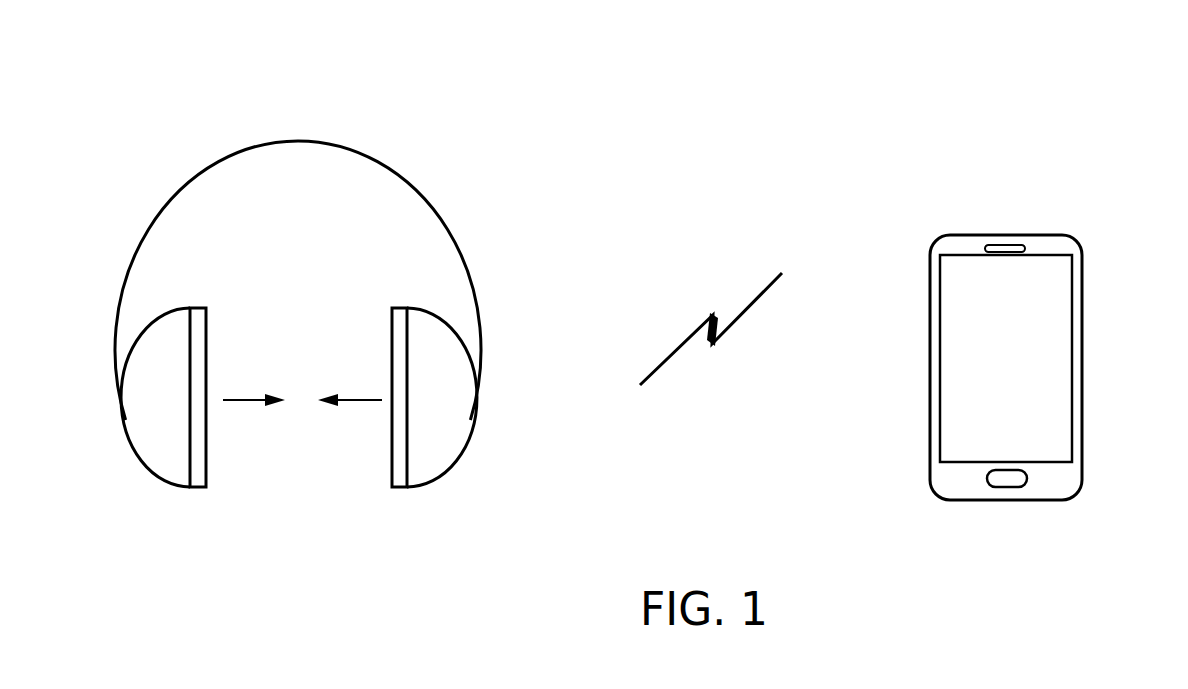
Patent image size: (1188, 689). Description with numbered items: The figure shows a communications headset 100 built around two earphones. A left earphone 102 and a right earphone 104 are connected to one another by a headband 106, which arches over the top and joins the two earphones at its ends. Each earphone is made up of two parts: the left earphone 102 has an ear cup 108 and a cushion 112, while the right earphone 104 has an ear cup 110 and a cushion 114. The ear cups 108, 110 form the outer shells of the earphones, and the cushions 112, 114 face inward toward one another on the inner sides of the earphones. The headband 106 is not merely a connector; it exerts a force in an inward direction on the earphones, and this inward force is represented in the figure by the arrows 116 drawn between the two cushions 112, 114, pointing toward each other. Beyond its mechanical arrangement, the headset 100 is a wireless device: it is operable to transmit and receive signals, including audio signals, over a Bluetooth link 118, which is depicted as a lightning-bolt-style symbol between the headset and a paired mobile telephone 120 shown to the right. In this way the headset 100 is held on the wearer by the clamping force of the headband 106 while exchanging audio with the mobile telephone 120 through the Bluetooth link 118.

The communications headset 100 is at (436, 90).
The left earphone 102 is at (148, 301).
The right earphone 104 is at (465, 304).
The headband 106 is at (172, 197).
The ear cup 108 is at (128, 358).
The ear cup 110 is at (467, 358).
The cushion 112 is at (207, 342).
The cushion 114 is at (390, 342).
The arrows 116 is at (302, 366).
The Bluetooth link 118 is at (673, 306).
The mobile telephone 120 is at (1100, 222).